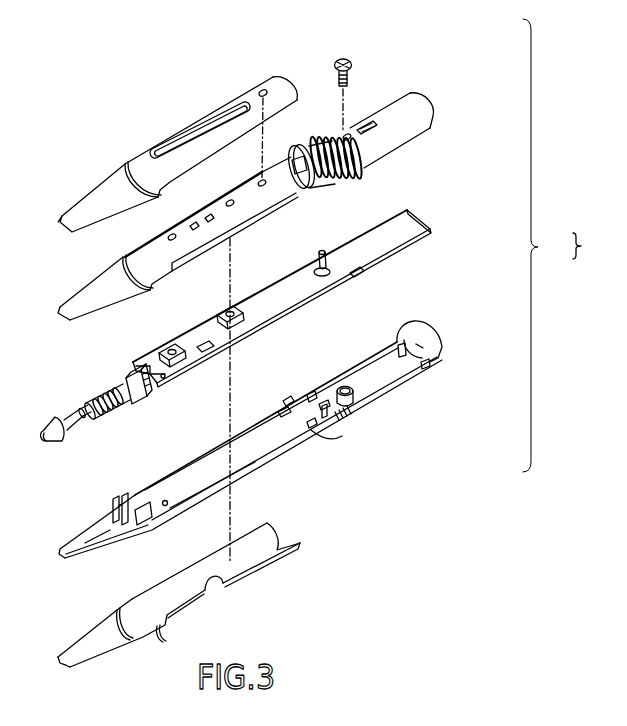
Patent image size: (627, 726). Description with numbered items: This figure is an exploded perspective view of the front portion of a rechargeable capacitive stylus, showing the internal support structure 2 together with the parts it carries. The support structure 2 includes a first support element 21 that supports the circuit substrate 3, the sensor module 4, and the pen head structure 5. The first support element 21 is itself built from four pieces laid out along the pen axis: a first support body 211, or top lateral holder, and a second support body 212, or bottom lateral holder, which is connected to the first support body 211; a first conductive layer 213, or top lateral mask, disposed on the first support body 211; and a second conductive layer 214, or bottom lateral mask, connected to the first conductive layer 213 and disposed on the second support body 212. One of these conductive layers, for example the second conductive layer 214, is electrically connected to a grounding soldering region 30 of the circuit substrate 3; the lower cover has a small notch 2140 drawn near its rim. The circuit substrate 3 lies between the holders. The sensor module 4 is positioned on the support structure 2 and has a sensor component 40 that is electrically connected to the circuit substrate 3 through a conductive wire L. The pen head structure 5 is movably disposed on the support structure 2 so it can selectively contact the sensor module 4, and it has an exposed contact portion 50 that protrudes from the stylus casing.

The support structure 2 is at (584, 246).
The first support element 21 is at (546, 245).
The first support body 211 is at (413, 110).
The second support body 212 is at (435, 337).
The first conductive layer 213 is at (287, 83).
The second conductive layer 214 is at (291, 558).
The notch 2140 is at (226, 592).
The circuit substrate 3 is at (296, 294).
The grounding soldering region 30 is at (210, 353).
The sensor module 4 is at (94, 398).
The sensor component 40 is at (137, 404).
The pen head structure 5 is at (66, 407).
The exposed contact portion 50 is at (60, 442).
The conductive wire L is at (157, 398).